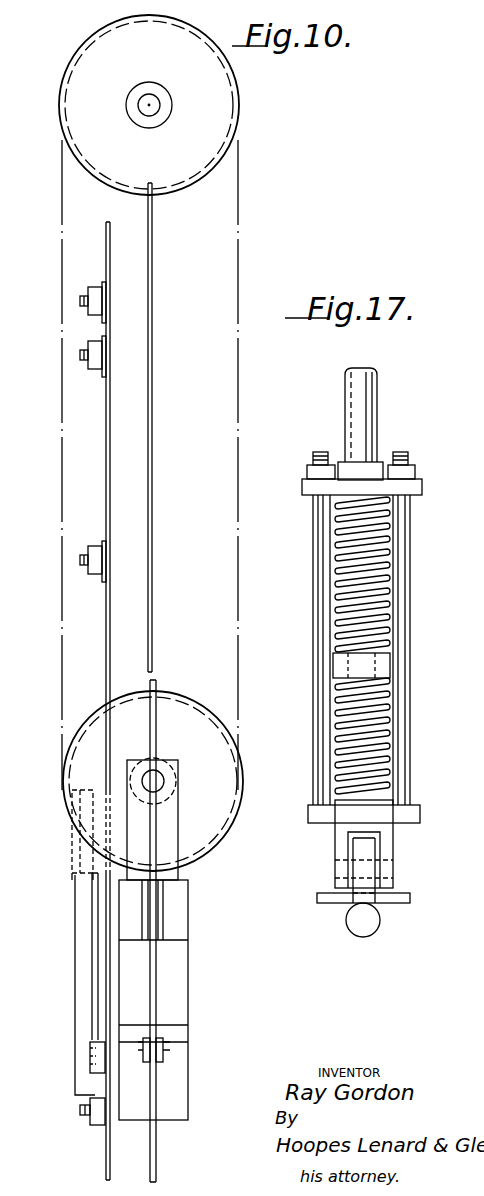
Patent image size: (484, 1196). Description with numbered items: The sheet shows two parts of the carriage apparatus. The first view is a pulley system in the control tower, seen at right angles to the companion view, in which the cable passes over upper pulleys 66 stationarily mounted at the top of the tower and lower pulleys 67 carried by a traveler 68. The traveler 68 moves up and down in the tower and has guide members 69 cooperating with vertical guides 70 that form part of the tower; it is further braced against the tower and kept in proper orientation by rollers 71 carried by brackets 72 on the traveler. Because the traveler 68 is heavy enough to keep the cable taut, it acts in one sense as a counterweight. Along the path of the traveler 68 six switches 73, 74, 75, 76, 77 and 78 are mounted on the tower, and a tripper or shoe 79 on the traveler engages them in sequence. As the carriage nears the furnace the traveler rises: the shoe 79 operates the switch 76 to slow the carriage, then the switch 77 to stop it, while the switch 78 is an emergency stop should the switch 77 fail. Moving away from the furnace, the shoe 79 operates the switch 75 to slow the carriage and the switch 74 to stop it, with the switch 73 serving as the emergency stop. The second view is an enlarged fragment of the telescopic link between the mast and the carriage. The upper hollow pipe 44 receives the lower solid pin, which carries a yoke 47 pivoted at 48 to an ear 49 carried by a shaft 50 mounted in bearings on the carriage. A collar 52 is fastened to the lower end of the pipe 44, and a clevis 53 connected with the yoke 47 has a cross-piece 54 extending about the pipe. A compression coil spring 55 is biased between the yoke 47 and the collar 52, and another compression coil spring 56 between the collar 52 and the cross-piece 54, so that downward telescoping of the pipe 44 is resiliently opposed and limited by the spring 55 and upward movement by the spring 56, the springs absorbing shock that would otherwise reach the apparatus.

In FIG. 10, the upper pulleys 66 is at (82, 46).
In FIG. 10, the lower pulleys 67 is at (128, 697).
In FIG. 10, the vertical guides 70 is at (160, 683).
In FIG. 10, the traveler 68 is at (188, 893).
In FIG. 10, the guide members 69 is at (163, 921).
In FIG. 10, the rollers 71 is at (160, 1042).
In FIG. 10, the brackets 72 is at (166, 1050).
In FIG. 10, the switch 73 is at (80, 1110).
In FIG. 10, the switch 74 is at (73, 1046).
In FIG. 10, the switch 75 is at (85, 843).
In FIG. 10, the switch 76 is at (86, 557).
In FIG. 10, the switch 77 is at (86, 353).
In FIG. 10, the switch 78 is at (86, 298).
In FIG. 10, the tripper or shoe 79 is at (76, 928).
In FIG. 17, the pipe 44 is at (372, 414).
In FIG. 17, the cross-piece 54 is at (416, 490).
In FIG. 17, the compression coil spring 56 is at (382, 548).
In FIG. 17, the compression coil spring 55 is at (384, 740).
In FIG. 17, the clevis 53 is at (313, 634).
In FIG. 17, the collar 52 is at (391, 665).
In FIG. 17, the pivot 48 is at (340, 856).
In FIG. 17, the ear 49 is at (370, 852).
In FIG. 17, the yoke 47 is at (386, 856).
In FIG. 17, the shaft 50 is at (357, 930).